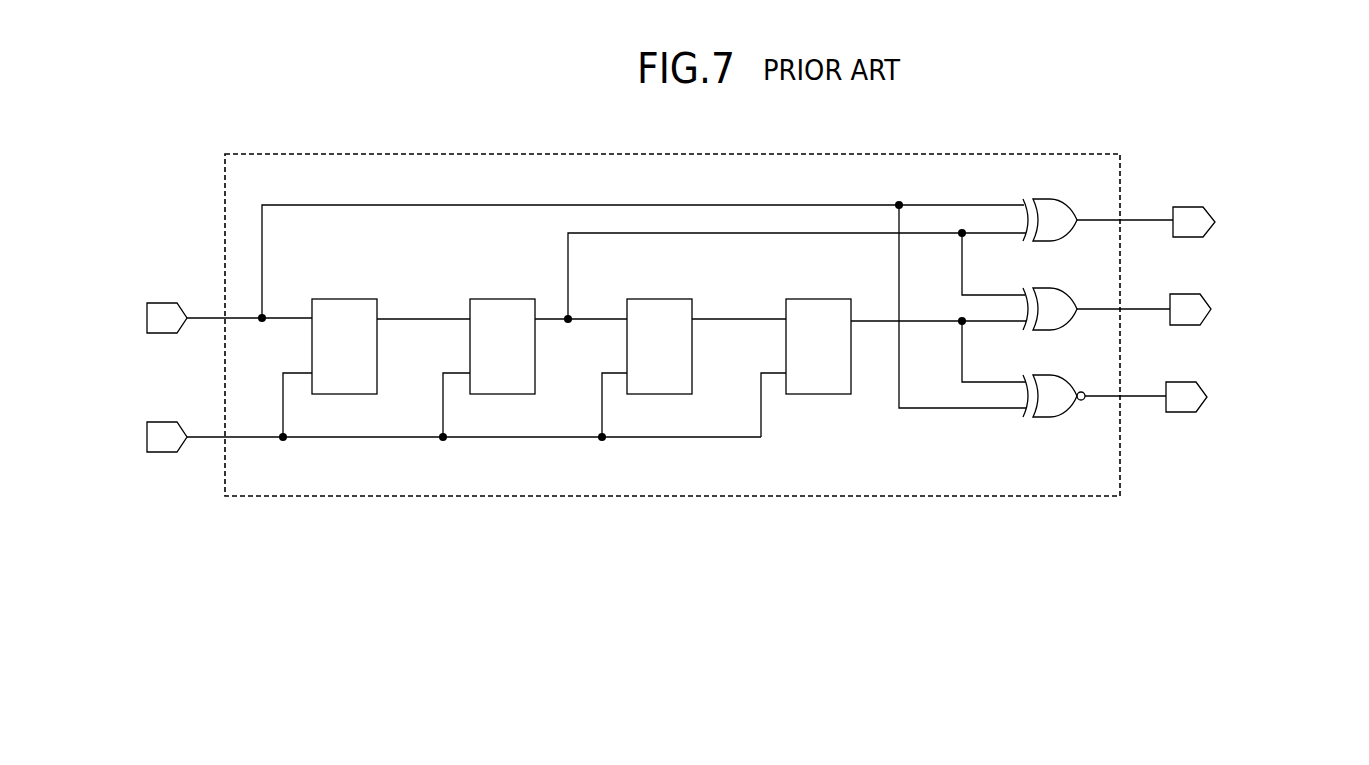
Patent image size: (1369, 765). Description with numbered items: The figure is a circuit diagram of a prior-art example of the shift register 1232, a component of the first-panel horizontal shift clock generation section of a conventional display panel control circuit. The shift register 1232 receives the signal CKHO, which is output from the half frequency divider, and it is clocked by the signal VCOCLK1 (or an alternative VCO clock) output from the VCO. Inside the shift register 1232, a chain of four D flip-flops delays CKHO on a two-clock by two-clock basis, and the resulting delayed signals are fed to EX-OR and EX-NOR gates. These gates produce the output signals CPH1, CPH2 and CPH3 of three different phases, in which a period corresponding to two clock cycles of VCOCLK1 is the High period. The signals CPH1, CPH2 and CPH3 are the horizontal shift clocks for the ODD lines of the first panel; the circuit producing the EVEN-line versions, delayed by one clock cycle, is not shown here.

The shift register 1232 is at (792, 496).
The signal CKHO is at (188, 318).
The signal VCOCLK1 is at (389, 438).
The horizontal shift clock CPH1 is at (1366, 214).
The horizontal shift clock CPH2 is at (1366, 302).
The horizontal shift clock CPH3 is at (1366, 389).